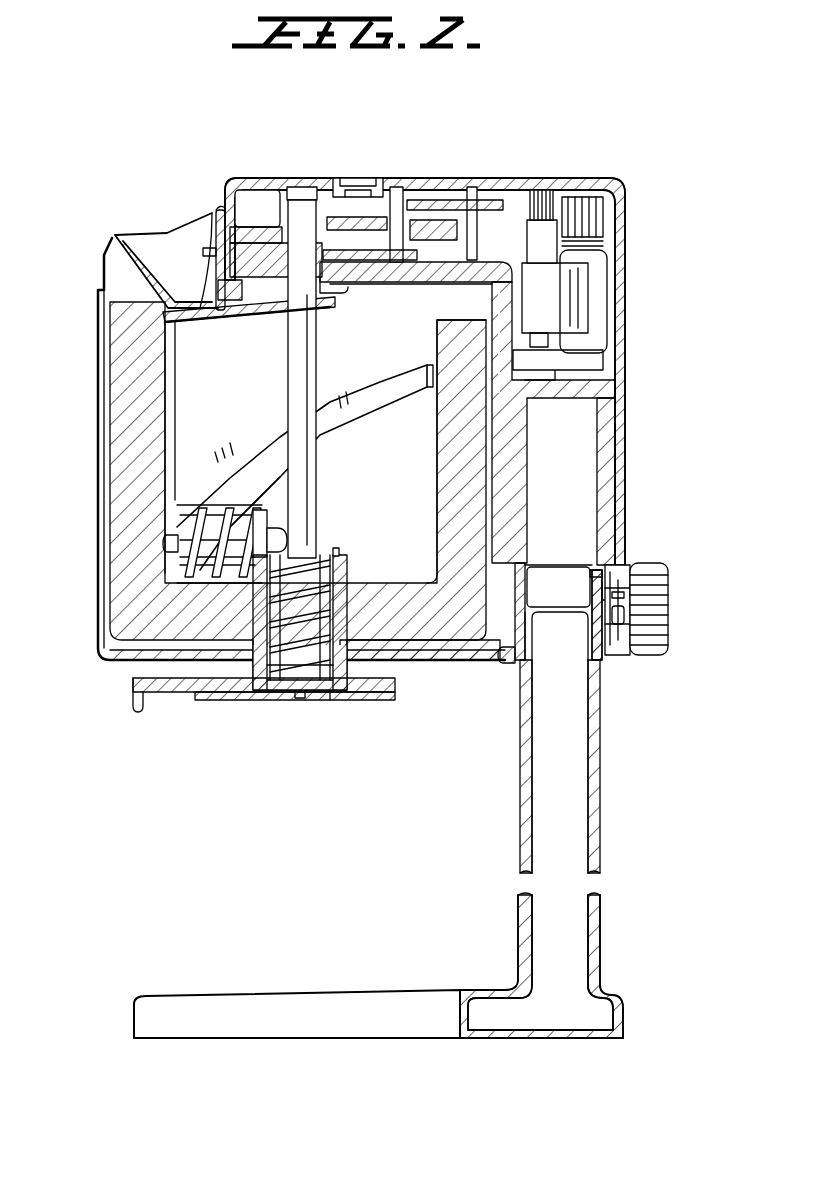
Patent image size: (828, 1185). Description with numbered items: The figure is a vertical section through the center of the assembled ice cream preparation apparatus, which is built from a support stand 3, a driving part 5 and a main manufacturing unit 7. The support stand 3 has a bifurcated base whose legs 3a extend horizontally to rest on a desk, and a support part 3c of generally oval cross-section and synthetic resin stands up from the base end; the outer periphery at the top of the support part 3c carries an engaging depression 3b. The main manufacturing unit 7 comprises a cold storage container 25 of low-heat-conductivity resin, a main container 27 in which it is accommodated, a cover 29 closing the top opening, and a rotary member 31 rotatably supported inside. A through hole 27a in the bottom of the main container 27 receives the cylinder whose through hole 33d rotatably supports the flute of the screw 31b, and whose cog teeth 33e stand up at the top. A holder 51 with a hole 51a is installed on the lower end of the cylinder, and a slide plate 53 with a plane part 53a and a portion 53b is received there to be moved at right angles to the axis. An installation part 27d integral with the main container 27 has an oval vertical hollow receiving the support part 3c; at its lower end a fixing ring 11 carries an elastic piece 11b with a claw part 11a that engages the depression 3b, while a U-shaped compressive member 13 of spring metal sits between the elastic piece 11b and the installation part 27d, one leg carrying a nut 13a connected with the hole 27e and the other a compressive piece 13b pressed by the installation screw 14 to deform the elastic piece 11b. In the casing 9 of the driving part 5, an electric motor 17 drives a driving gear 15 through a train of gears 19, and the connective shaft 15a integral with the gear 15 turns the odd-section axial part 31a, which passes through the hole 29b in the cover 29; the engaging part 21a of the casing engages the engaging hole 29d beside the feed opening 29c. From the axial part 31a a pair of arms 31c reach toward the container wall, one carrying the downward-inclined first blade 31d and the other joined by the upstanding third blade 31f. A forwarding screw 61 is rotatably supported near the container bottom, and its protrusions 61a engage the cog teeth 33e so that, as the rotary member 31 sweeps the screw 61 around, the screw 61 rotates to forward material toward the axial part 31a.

The support stand 3 is at (601, 946).
The legs of support base 3a is at (350, 1000).
The engaging depression 3b is at (575, 620).
The support part 3c is at (600, 766).
The driving part 5 is at (626, 225).
The main manufacturing unit 7 is at (97, 503).
The casing 9 is at (626, 298).
The fixing ring 11 is at (507, 666).
The claw part 11a is at (594, 570).
The elastic piece 11b is at (612, 598).
The compressive member 13 is at (600, 645).
The nut 13a is at (630, 655).
The compressive piece 13b is at (660, 575).
The installation screw 14 is at (650, 570).
The driving gear 15 is at (255, 243).
The connective shaft 15a is at (380, 283).
The electric motor 17 is at (585, 294).
The train of gears 19 is at (410, 230).
The engaging part 21a is at (216, 207).
The cold storage container 25 is at (437, 524).
The main container 27 is at (100, 566).
The through hole 27a is at (365, 648).
The installation part 27d is at (615, 438).
The hole 27e is at (645, 608).
The cover 29 is at (168, 236).
The hole 29b is at (340, 298).
The feed opening 29c is at (195, 300).
The engaging hole 29d is at (239, 295).
The rotary member 31 is at (360, 410).
The axial part 31a is at (316, 352).
The screw 31b is at (302, 690).
The arms 31c is at (226, 322).
The first blade 31d is at (262, 445).
The third blade 31f is at (176, 413).
The through hole 33d is at (332, 614).
The cog teeth 33e is at (344, 533).
The holder 51 is at (370, 674).
The hole 51a is at (285, 680).
The slide plate 53 is at (160, 694).
The plane part 53a is at (365, 698).
The bracket tab 53b is at (340, 700).
The screw 61 is at (215, 580).
The protrusions 61a is at (285, 527).